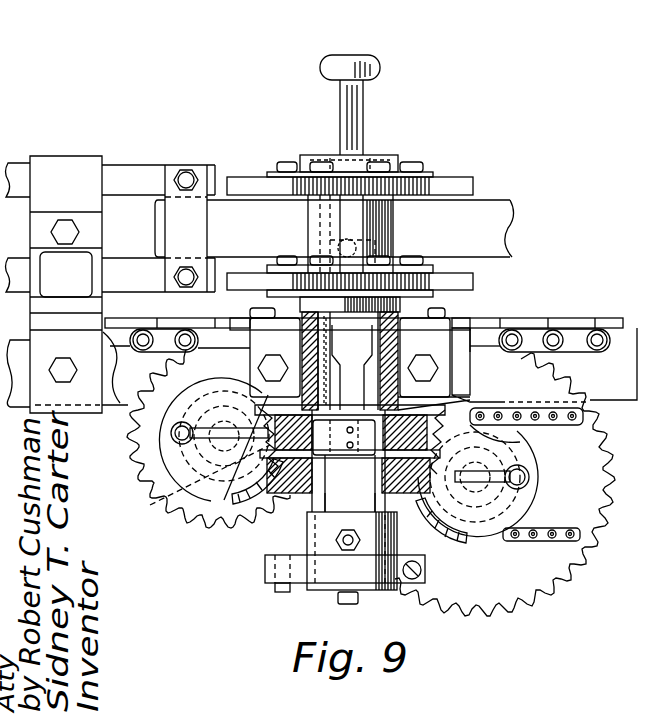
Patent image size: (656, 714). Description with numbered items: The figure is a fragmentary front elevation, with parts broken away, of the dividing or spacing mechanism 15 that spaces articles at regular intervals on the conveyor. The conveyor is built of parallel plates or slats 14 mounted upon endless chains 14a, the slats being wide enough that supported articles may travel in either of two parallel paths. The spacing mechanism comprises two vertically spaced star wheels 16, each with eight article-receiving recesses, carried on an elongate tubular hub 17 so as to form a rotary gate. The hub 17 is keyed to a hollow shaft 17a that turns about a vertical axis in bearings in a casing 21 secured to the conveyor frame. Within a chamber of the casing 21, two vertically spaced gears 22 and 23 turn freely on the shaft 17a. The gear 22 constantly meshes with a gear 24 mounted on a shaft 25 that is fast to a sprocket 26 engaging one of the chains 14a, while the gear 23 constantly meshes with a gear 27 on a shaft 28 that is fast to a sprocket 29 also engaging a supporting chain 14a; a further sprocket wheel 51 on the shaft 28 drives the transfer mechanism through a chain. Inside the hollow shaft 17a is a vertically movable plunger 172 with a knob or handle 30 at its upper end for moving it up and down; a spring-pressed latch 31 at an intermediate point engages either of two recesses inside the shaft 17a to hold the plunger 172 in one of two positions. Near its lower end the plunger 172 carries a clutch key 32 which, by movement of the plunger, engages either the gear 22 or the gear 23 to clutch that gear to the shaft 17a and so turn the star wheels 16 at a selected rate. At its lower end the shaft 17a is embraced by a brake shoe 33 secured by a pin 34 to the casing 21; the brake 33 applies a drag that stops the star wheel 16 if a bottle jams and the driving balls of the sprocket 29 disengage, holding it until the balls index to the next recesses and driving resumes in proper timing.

The slats 14 is at (545, 322).
The endless chains 14a is at (106, 406).
The dividing or spacing mechanism 15 is at (247, 563).
The star wheels 16 is at (452, 186).
The tubular hub 17 is at (397, 348).
The hollow shaft 17a is at (347, 362).
The plunger 172 is at (352, 137).
The casing 21 is at (435, 340).
The gear 22 is at (562, 414).
The gear 23 is at (415, 505).
The gear 24 is at (210, 515).
The shaft 25 is at (150, 505).
The sprocket 26 is at (160, 466).
The gear 27 is at (497, 542).
The shaft 28 is at (495, 484).
The sprocket 29 is at (552, 570).
The knob or handle 30 is at (367, 67).
The spring-pressed latch 31 is at (330, 252).
The clutch key 32 is at (440, 398).
The brake shoe 33 is at (313, 590).
The pin 34 is at (280, 595).
The sprocket wheel 51 is at (520, 442).